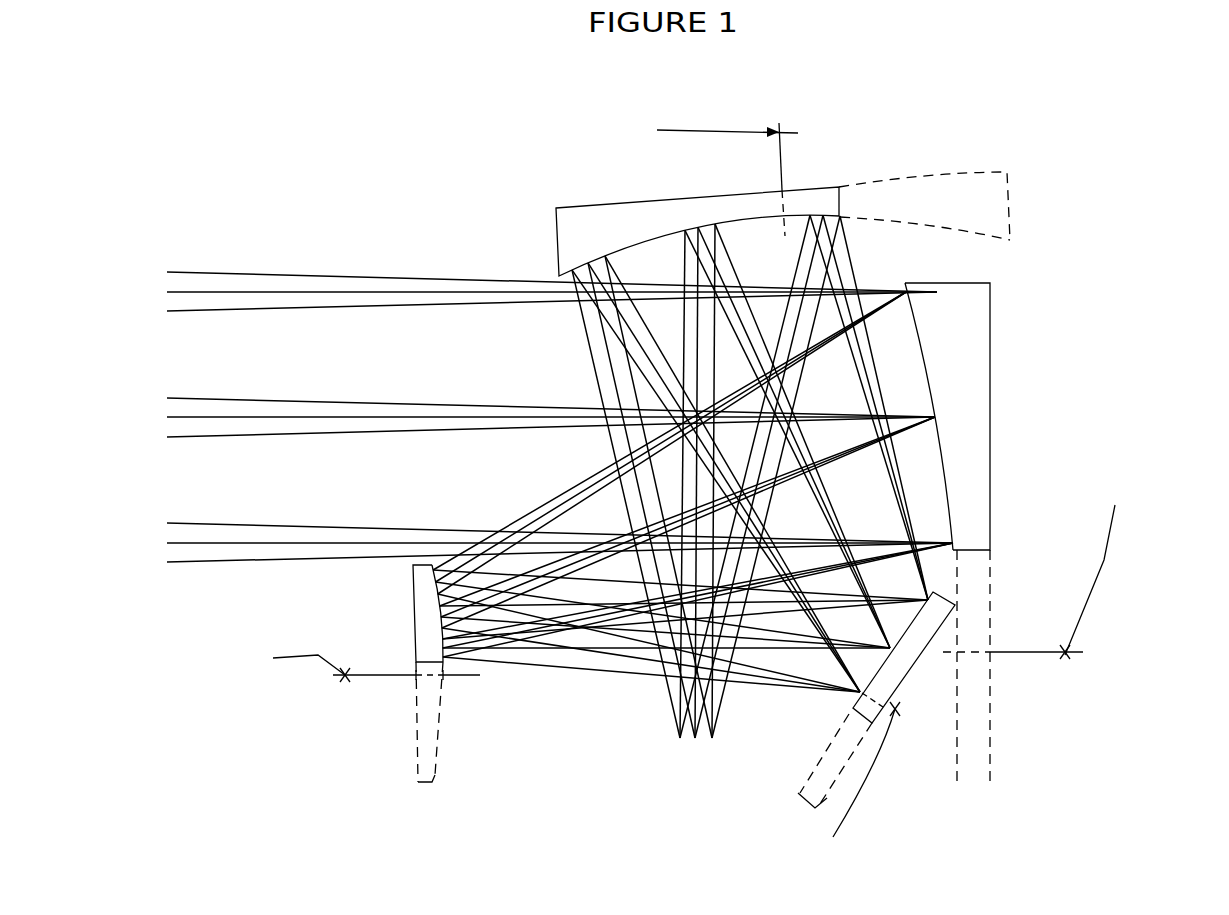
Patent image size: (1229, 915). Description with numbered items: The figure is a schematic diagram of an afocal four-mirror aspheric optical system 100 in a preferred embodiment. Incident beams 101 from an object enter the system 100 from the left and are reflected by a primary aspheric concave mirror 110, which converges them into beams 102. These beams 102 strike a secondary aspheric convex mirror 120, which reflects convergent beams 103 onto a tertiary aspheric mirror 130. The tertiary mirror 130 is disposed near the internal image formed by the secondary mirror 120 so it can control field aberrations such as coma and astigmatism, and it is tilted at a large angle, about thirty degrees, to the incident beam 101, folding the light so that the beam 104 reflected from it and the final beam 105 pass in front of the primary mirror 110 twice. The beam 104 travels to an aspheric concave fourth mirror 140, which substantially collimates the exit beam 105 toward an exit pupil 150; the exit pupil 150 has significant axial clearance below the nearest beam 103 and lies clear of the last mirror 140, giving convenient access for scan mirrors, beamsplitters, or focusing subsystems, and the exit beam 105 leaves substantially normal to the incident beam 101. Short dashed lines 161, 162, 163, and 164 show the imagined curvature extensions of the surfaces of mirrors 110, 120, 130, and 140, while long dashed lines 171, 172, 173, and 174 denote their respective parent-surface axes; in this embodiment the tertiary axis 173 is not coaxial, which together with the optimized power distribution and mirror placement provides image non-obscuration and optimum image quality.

The optical system 100 is at (306, 188).
The incident beams 101 is at (248, 273).
The convergent beams 102 is at (838, 342).
The reflected convergent beams 103 is at (642, 577).
The beam reflected from tertiary mirror 104 is at (842, 533).
The exit beam 105 is at (687, 276).
The primary aspheric concave mirror 110 is at (992, 370).
The secondary aspheric convex mirror 120 is at (413, 635).
The tertiary aspheric mirror 130 is at (933, 642).
The aspheric concave fourth mirror 140 is at (675, 199).
The exit pupil 150 is at (696, 769).
The curvature extension of primary mirror surface 161 is at (952, 780).
The curvature extension of secondary mirror surface 162 is at (438, 758).
The curvature extension of tertiary mirror surface 163 is at (815, 762).
The curvature extension of fourth mirror surface 164 is at (957, 229).
The axis of primary mirror 171 is at (1020, 650).
The axis of secondary mirror 172 is at (392, 677).
The axis of tertiary mirror 173 is at (902, 712).
The axis of fourth mirror 174 is at (783, 172).